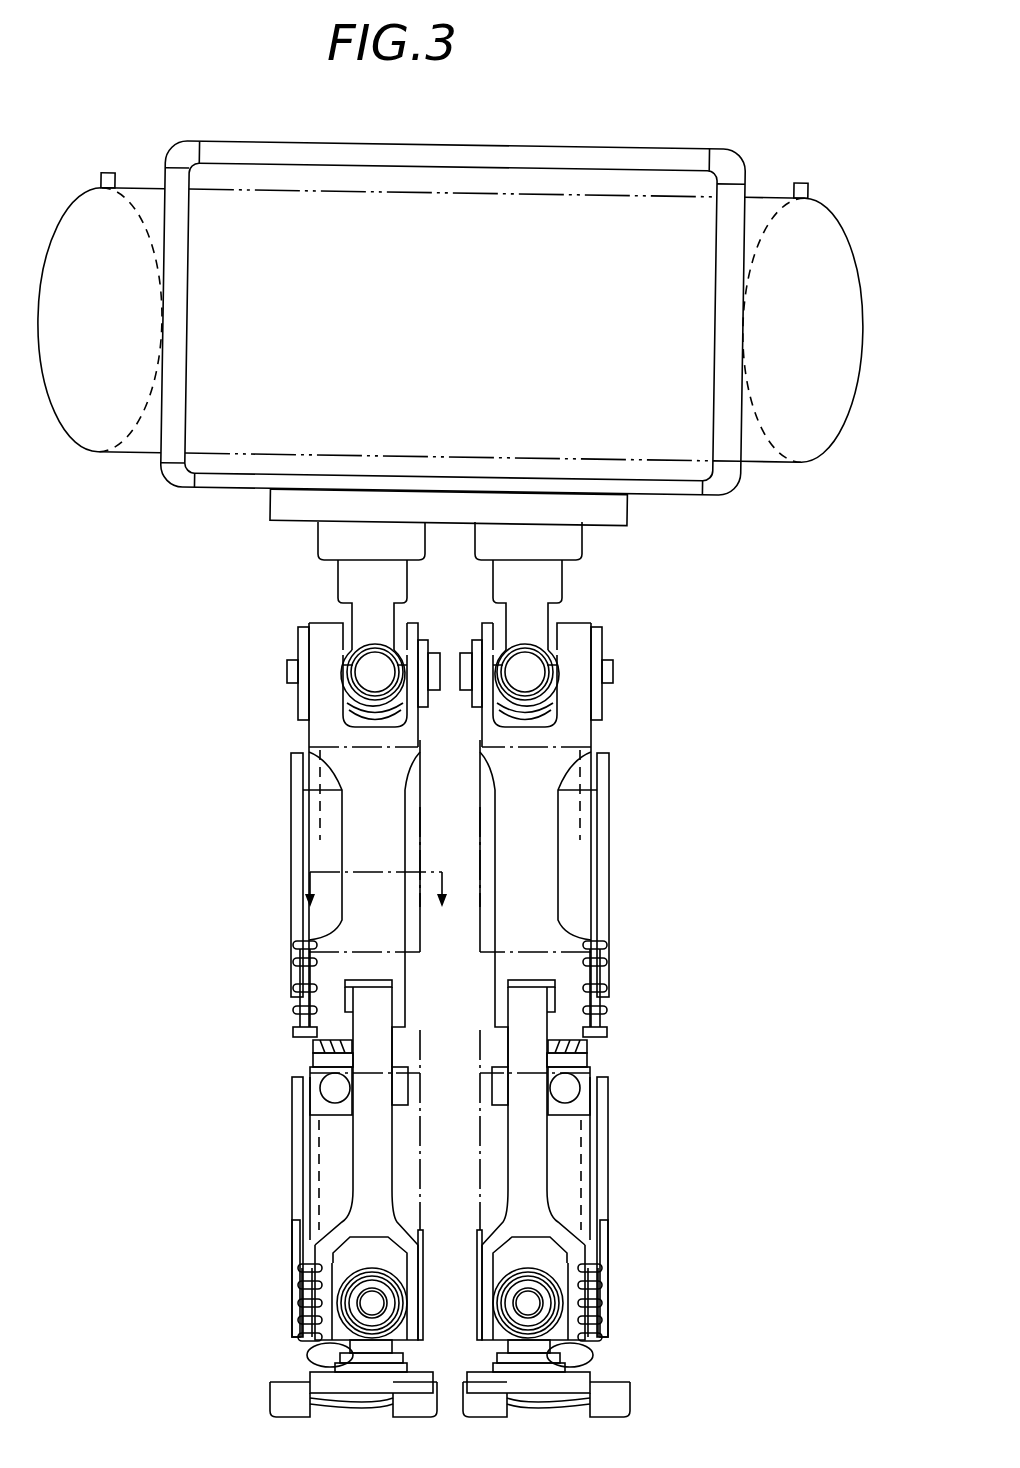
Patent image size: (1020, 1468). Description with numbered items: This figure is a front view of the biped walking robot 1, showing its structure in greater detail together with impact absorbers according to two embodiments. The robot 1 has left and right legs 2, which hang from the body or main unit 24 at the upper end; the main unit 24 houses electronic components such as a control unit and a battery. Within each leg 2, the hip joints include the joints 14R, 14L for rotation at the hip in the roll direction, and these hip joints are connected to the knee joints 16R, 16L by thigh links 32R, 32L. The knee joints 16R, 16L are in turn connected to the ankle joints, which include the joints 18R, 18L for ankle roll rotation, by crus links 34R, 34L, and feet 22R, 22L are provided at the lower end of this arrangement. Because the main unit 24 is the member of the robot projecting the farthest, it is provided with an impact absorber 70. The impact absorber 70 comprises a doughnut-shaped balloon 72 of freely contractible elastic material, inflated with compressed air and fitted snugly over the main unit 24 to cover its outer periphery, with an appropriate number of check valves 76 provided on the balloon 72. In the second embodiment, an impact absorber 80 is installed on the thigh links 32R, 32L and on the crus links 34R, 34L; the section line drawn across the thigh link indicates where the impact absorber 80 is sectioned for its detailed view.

The biped walking robot 1 is at (643, 597).
The legs 2 is at (618, 1082).
The hip roll joint (right) 14R is at (285, 672).
The hip roll joint (left) 14L is at (615, 672).
The knee joint (right) 16R is at (289, 1015).
The knee joint (left) 16L is at (611, 1015).
The ankle roll joint (right) 18R is at (285, 1297).
The ankle roll joint (left) 18L is at (610, 1305).
The foot (right) 22R is at (270, 1392).
The foot (left) 22L is at (628, 1392).
The body (main unit) 24 is at (535, 148).
The thigh link (right) 32R is at (340, 850).
The thigh link (left) 32L is at (560, 850).
The crus link (right) 34R is at (345, 1155).
The crus link (left) 34L is at (555, 1155).
The impact absorber 70 is at (762, 173).
The balloon 72 is at (856, 263).
The valve 76 is at (107, 177).
The impact absorber 80 is at (283, 803).